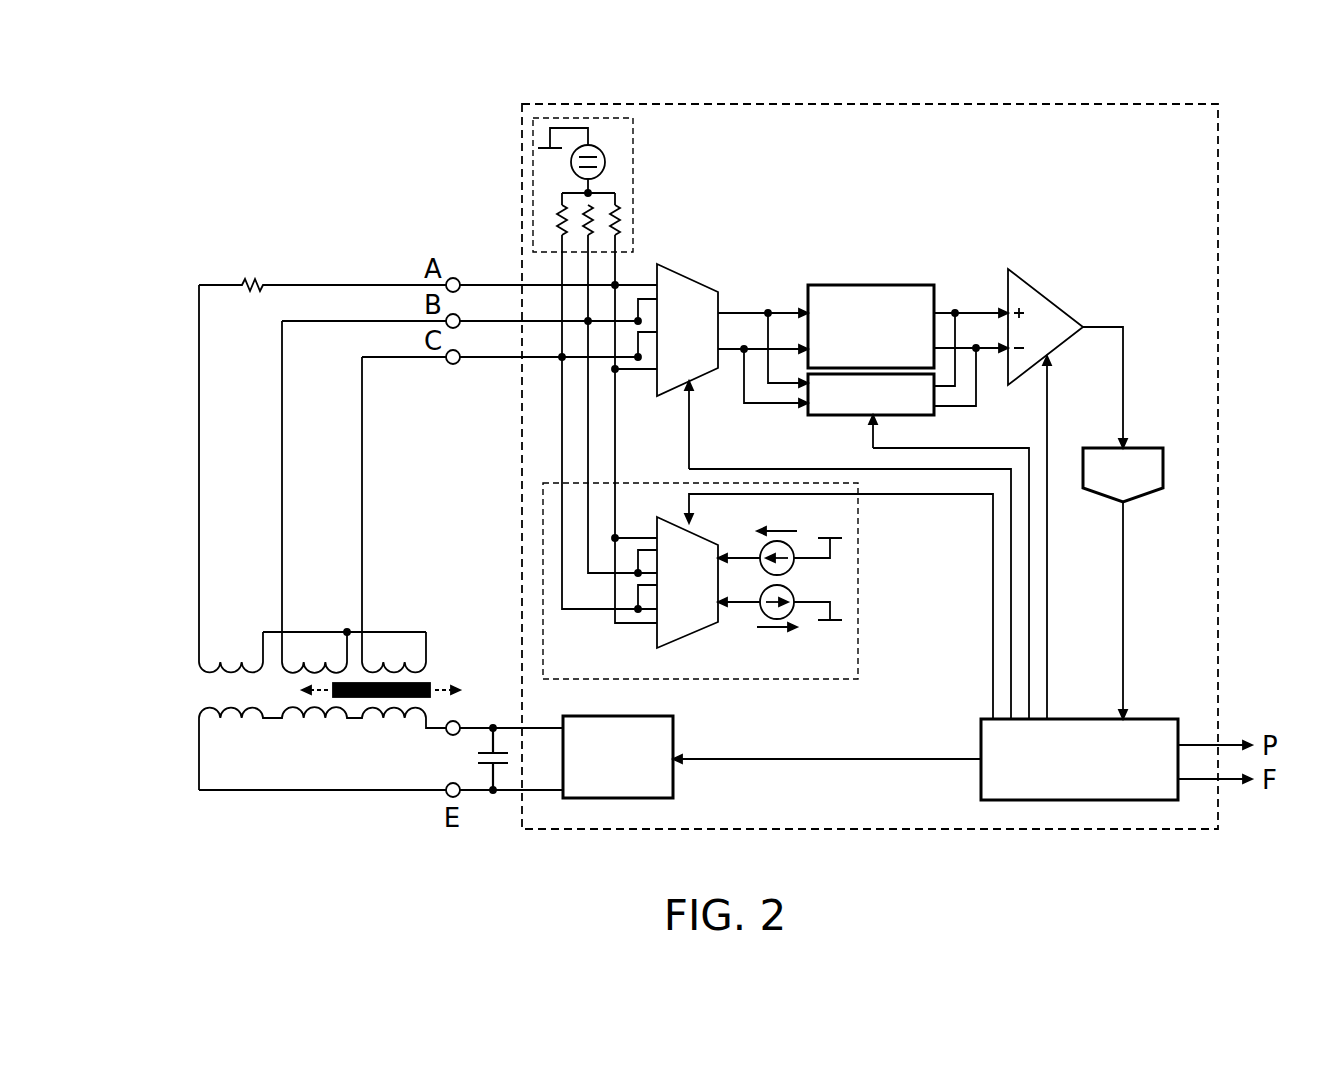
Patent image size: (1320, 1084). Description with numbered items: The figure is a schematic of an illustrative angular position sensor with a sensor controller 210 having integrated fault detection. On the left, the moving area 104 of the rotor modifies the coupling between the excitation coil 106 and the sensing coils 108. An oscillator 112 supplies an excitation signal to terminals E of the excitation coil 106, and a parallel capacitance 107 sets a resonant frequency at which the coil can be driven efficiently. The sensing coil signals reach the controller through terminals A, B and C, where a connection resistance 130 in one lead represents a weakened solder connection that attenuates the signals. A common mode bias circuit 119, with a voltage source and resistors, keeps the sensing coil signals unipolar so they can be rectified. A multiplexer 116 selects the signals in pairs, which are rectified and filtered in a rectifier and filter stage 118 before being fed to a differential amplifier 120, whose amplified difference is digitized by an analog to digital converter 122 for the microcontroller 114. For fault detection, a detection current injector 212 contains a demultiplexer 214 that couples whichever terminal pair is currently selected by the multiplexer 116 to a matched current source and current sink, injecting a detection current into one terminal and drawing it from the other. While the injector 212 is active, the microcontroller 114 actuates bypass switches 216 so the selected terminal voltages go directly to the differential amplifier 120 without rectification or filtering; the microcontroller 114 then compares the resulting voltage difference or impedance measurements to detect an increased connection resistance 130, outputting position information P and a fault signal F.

The sensor controller 210 is at (1153, 104).
The common mode bias circuit 119 is at (633, 196).
The multiplexer 116 is at (672, 270).
The rectifier and filter 118 is at (858, 285).
The differential amplifier 120 is at (1045, 293).
The analog to digital converter 122 is at (1140, 448).
The detection current injector 212 is at (732, 581).
The demultiplexer 214 is at (686, 640).
The bypass switches 216 is at (825, 415).
The microcontroller 114 is at (981, 740).
The oscillator 112 is at (675, 740).
The parallel capacitance 107 is at (475, 756).
The area 104 is at (430, 683).
The excitation coil 106 is at (186, 695).
The sensing coils 108 is at (186, 640).
The connection resistance 130 is at (255, 278).